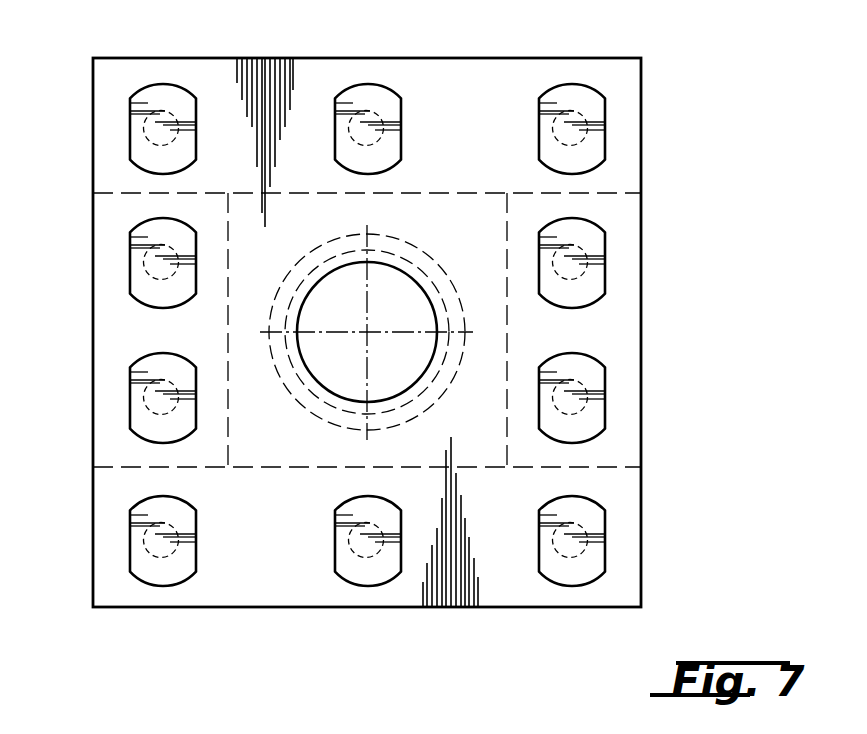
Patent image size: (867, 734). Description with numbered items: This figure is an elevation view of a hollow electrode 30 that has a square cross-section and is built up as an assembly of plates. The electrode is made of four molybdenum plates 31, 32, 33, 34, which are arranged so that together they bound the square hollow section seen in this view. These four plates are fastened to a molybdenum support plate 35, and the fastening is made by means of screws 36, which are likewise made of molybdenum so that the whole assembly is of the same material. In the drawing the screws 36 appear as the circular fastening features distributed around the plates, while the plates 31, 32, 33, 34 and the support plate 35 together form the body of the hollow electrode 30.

The hollow electrode 30 is at (199, 620).
The molybdenum plate 31 is at (125, 322).
The molybdenum plate 32 is at (435, 77).
The molybdenum plate 33 is at (622, 315).
The molybdenum plate 34 is at (513, 587).
The molybdenum support plate 35 is at (623, 442).
The screws 36 is at (358, 92).